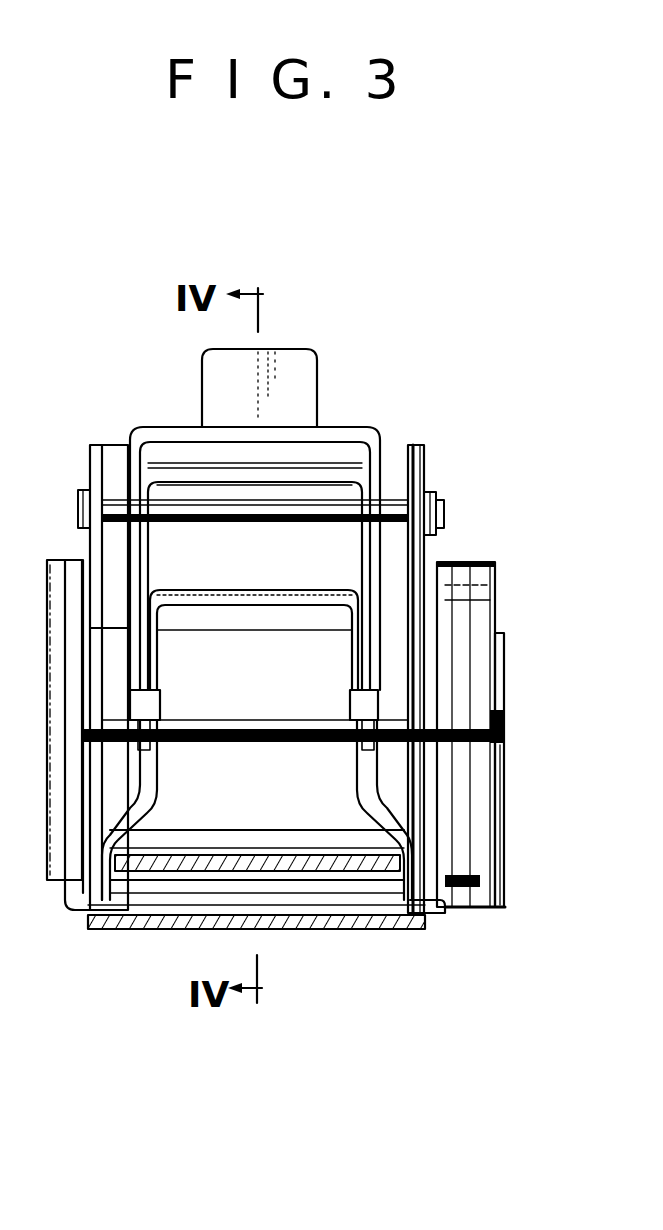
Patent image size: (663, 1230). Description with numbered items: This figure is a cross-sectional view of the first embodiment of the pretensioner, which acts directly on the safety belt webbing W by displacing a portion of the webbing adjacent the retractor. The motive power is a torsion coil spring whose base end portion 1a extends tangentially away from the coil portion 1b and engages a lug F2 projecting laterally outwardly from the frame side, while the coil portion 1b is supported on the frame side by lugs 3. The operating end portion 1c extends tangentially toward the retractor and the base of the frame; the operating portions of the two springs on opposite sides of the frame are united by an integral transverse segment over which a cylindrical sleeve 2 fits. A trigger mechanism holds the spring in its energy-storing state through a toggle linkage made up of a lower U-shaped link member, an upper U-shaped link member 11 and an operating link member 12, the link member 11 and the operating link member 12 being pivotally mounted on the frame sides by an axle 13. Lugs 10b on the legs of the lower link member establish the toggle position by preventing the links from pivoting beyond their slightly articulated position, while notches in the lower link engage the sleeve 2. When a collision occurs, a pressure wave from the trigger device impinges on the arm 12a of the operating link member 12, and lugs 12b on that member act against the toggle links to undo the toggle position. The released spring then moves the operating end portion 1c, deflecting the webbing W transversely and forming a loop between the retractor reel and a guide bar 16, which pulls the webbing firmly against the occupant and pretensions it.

The base end portion 1a is at (485, 907).
The coil portion 1b is at (470, 560).
The operating end portion 1c is at (426, 915).
The cylindrical sleeve 2 is at (130, 905).
The lugs 3 is at (502, 655).
The lugs 10b is at (356, 638).
The U-shaped link member 11 is at (366, 550).
The operating link member 12 is at (372, 470).
The arm 12a is at (303, 390).
The lugs 12b is at (161, 703).
The axle 13 is at (446, 506).
The guide bar 16 is at (272, 840).
The webbing W is at (310, 872).
The lug F2 is at (504, 795).